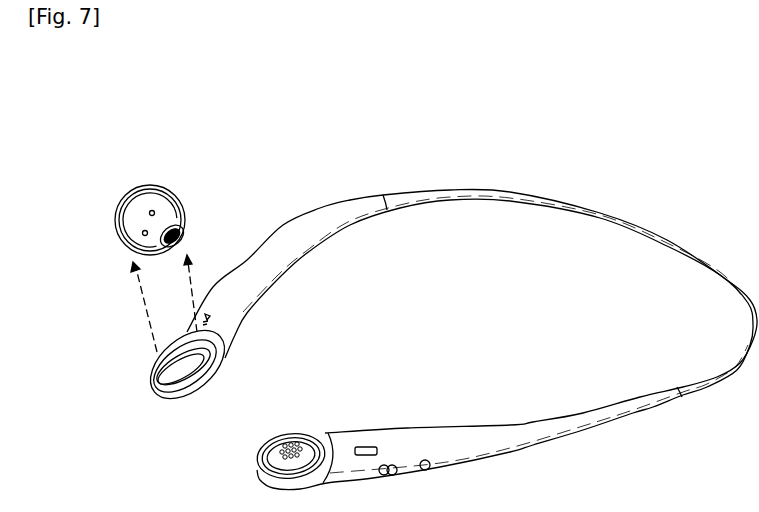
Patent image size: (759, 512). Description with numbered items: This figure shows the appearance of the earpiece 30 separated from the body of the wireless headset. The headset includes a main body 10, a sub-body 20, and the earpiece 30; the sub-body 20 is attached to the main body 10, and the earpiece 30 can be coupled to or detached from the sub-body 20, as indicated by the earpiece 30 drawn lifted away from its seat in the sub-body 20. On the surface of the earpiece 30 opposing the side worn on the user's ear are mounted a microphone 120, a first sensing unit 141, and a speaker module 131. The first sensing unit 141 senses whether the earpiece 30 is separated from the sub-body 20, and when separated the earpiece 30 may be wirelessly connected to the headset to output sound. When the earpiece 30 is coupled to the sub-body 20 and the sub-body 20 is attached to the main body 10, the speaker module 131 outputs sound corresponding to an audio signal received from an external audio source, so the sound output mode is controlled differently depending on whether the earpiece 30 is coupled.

The earpiece 30 is at (71, 75).
The main body 10 is at (607, 413).
The sub-body 20 is at (157, 398).
The microphone 120 is at (149, 235).
The first sensing unit 141 is at (148, 212).
The speaker module 131 is at (181, 236).